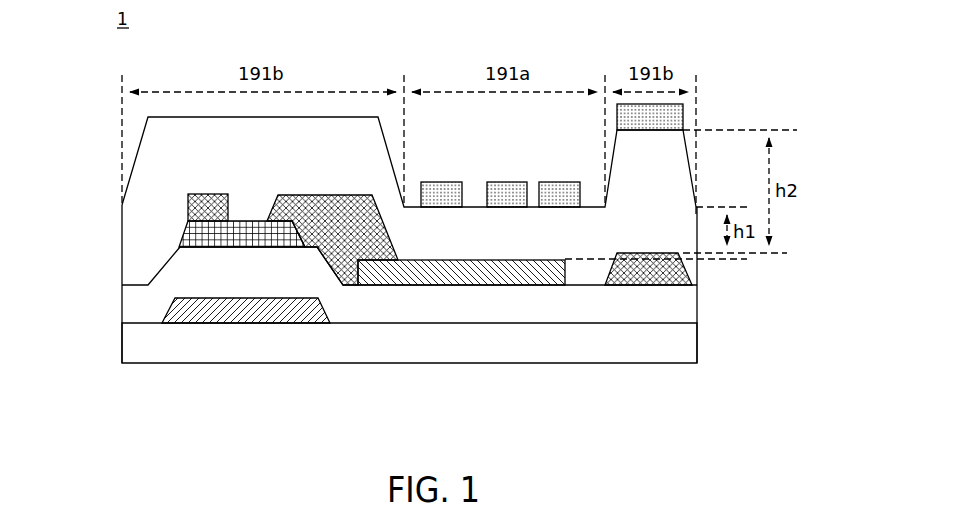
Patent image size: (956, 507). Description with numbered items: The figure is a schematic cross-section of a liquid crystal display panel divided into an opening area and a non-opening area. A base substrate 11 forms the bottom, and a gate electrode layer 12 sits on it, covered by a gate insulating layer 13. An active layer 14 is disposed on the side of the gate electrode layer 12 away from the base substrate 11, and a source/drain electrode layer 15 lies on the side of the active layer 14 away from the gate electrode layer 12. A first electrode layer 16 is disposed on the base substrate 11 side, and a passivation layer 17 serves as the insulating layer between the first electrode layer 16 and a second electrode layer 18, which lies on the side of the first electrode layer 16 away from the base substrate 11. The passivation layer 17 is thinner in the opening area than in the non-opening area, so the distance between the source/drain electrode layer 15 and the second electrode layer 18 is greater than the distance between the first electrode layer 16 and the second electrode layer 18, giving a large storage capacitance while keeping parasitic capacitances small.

The base substrate 11 is at (135, 345).
The gate electrode layer 12 is at (180, 310).
The gate insulating layer 13 is at (148, 300).
The active layer 14 is at (195, 232).
The source/drain electrode layer 15 is at (195, 206).
The first electrode layer 16 is at (457, 279).
The passivation layer 17 is at (158, 164).
The second electrode layer 18 is at (503, 200).